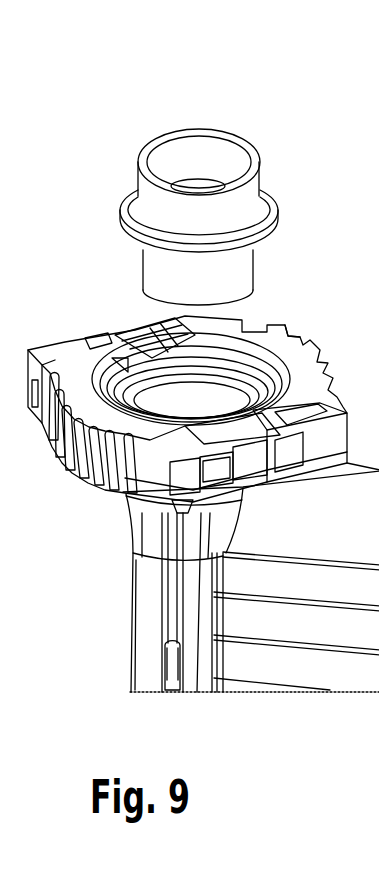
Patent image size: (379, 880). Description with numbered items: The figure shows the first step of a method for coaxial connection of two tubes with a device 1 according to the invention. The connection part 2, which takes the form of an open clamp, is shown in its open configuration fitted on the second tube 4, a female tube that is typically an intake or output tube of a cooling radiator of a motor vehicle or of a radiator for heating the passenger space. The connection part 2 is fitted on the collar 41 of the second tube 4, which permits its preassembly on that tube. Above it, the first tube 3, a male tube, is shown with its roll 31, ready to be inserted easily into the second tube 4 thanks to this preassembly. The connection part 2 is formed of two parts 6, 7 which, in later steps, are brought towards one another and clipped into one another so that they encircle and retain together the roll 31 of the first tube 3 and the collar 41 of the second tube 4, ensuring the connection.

The device 1 is at (239, 131).
The first tube 3 is at (266, 156).
The roll 31 is at (270, 191).
The connection part 2 is at (306, 334).
The part of the connection part 6 is at (280, 342).
The part of the connection part 7 is at (77, 390).
The collar 41 is at (134, 340).
The second tube 4 is at (124, 506).